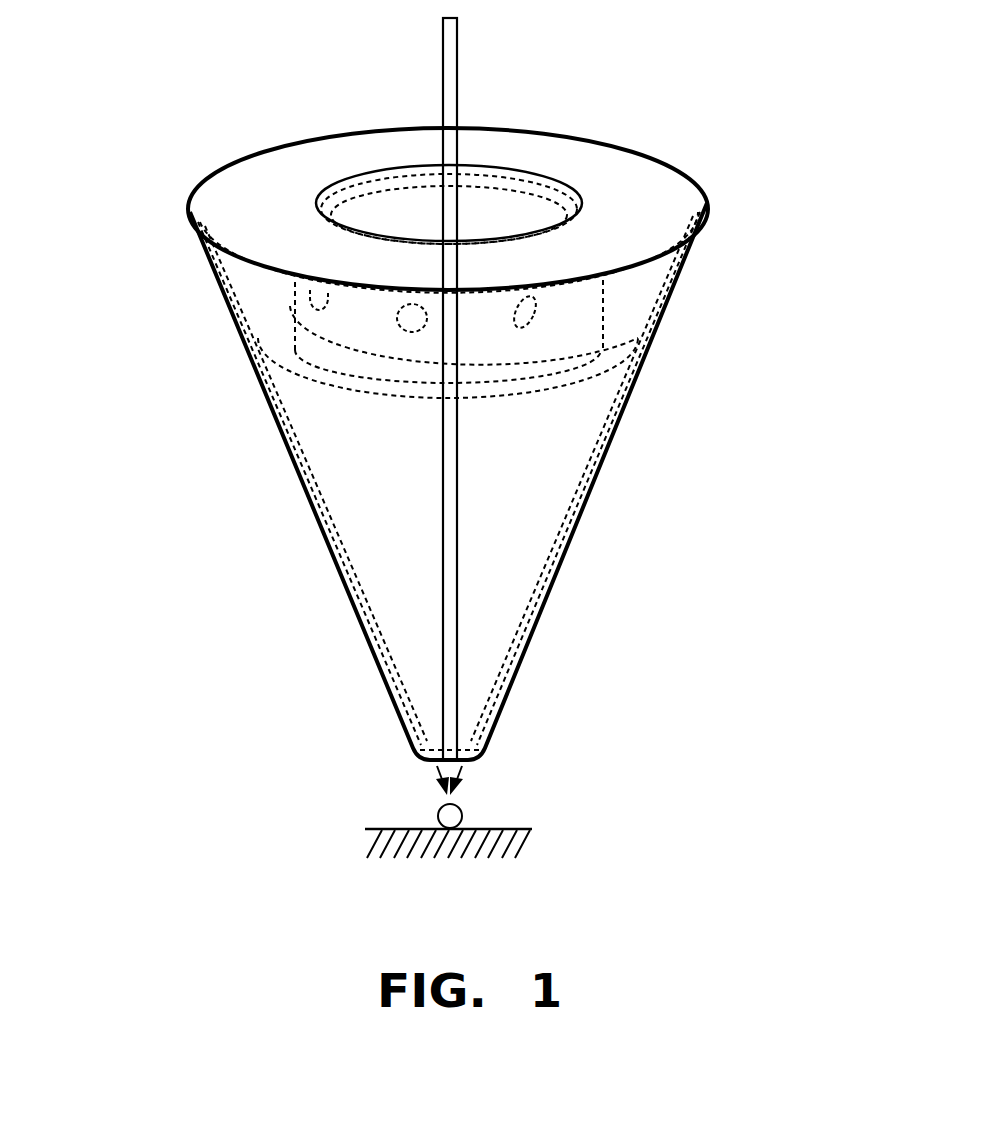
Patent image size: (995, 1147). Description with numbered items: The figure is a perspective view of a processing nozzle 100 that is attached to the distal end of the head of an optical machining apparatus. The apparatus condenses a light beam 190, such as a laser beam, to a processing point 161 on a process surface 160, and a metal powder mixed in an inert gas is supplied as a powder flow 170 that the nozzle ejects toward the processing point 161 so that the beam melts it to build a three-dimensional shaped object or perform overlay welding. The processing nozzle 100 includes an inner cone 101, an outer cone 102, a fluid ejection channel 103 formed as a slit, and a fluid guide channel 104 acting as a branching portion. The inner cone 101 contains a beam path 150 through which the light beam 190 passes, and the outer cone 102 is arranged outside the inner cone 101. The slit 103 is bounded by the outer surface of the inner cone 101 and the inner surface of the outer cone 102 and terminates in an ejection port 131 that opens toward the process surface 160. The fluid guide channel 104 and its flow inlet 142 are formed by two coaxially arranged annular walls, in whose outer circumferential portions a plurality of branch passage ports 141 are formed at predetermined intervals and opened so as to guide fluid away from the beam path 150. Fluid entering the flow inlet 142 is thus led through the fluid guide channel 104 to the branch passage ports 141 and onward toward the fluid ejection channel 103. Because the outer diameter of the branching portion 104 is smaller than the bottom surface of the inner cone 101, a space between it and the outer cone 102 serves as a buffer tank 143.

The processing nozzle 100 is at (195, 88).
The inner cone 101 is at (552, 536).
The outer cone 102 is at (302, 485).
The fluid ejection channel 103 is at (338, 561).
The fluid guide channel 104 is at (318, 343).
The ejection port 131 is at (482, 750).
The branch passage ports 141 is at (308, 293).
The flow inlet 142 is at (535, 187).
The buffer tank 143 is at (242, 277).
The beam path 150 is at (398, 213).
The process surface 160 is at (520, 828).
The processing point 161 is at (438, 815).
The powder flow 170 is at (435, 767).
The light beam 190 is at (458, 38).